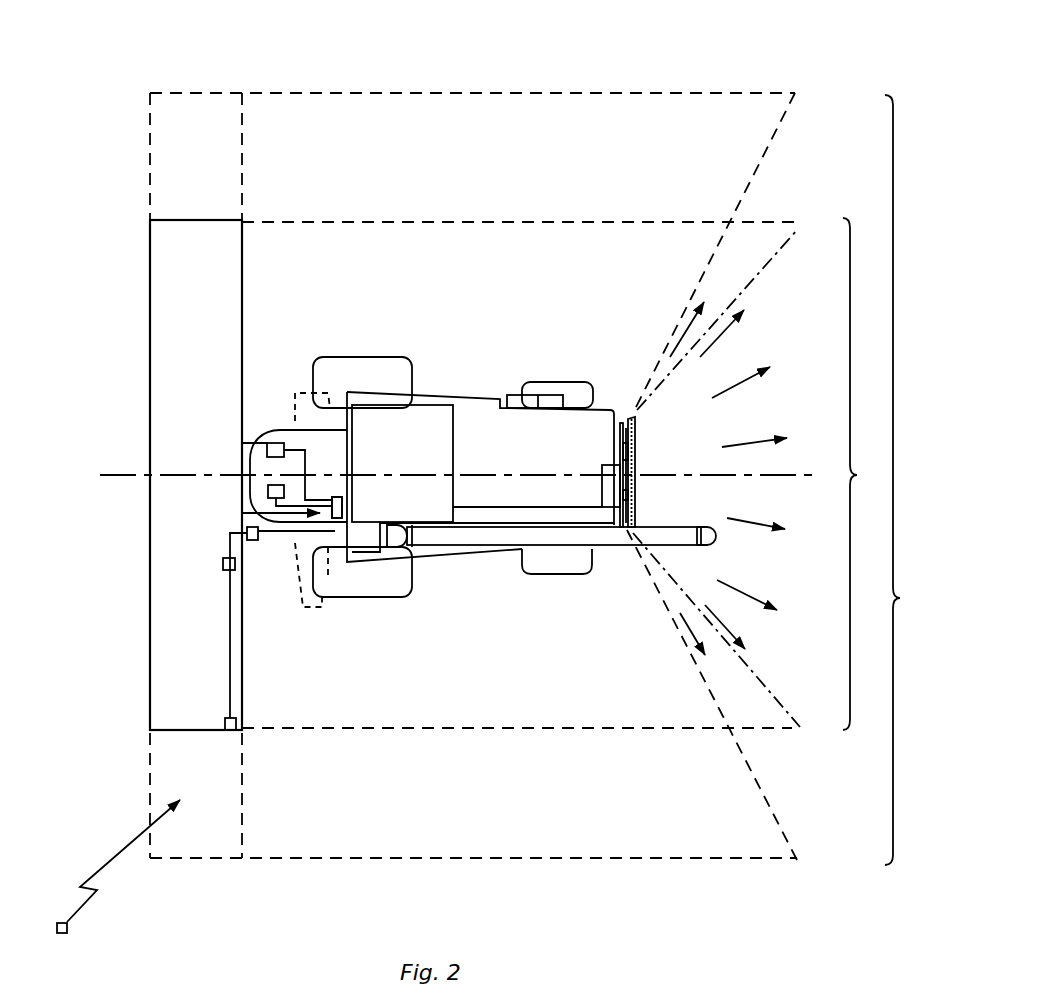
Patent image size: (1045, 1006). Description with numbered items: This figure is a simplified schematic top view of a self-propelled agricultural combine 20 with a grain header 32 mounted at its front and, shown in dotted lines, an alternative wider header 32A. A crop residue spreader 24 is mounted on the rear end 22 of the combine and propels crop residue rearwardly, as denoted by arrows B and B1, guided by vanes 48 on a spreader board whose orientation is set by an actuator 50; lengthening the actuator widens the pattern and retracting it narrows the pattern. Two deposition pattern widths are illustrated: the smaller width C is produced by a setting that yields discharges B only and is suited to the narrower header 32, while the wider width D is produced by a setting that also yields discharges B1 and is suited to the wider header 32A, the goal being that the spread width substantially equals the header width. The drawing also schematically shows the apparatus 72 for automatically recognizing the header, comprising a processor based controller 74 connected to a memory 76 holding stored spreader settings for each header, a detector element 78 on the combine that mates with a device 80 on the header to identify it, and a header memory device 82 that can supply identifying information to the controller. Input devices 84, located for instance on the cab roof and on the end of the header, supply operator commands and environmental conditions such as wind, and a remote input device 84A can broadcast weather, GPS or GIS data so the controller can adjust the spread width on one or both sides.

The self-propelled agricultural combine 20 is at (478, 392).
The rear end 22 is at (617, 412).
The crop residue spreader 24 is at (641, 431).
The header 32 is at (150, 263).
The header 32A is at (196, 92).
The vanes 48 is at (637, 505).
The actuator 50 is at (623, 455).
The apparatus 72 is at (243, 513).
The controller 74 is at (337, 497).
The memory 76 is at (337, 507).
The detector element 78 is at (257, 543).
The device 80 is at (240, 578).
The memory device 82 is at (222, 565).
The input device 84 is at (268, 488).
The remote input device 84A is at (68, 927).
The crop discharge B is at (733, 380).
The crop discharge B1 is at (688, 317).
The crop residue deposition pattern width C is at (858, 474).
The crop residue deposition pattern width D is at (905, 480).